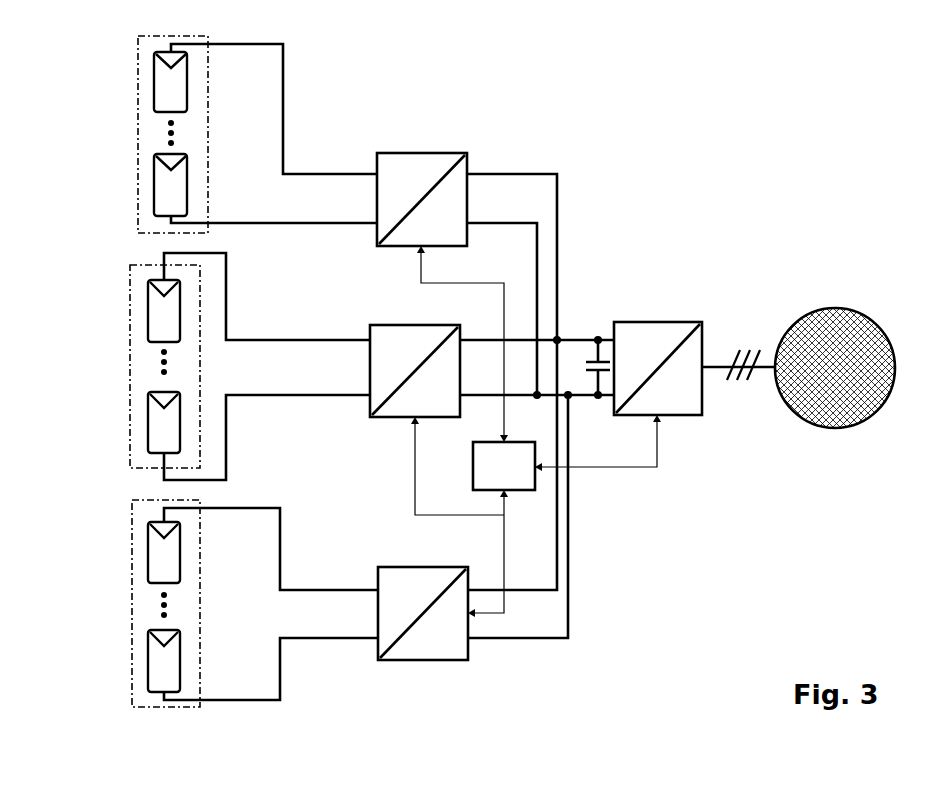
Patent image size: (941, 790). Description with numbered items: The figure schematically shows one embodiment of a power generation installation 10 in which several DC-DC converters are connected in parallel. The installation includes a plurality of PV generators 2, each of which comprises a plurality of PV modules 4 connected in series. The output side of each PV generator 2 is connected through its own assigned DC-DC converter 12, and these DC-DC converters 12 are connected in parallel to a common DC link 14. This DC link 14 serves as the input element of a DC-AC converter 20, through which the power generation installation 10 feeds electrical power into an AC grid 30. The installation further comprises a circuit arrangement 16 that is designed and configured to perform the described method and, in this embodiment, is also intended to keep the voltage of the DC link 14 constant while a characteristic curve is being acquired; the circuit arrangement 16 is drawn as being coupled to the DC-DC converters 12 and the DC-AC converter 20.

The PV generator 2 is at (137, 132).
The PV module 4 is at (167, 372).
The power generation installation 10 is at (748, 86).
The DC-DC converter 12 is at (421, 150).
The DC link 14 is at (592, 356).
The circuit arrangement 16 is at (536, 431).
The DC-AC converter 20 is at (659, 320).
The AC grid 30 is at (836, 308).